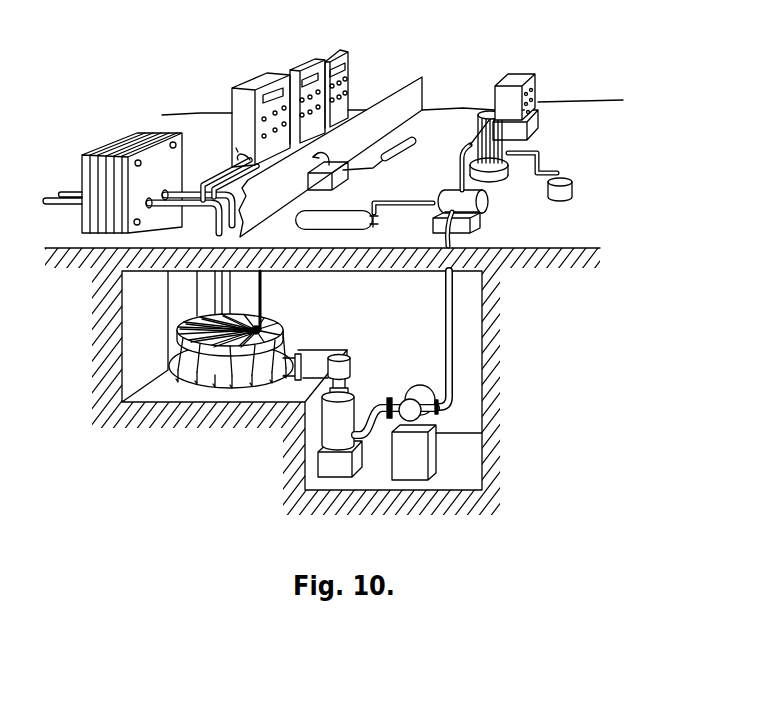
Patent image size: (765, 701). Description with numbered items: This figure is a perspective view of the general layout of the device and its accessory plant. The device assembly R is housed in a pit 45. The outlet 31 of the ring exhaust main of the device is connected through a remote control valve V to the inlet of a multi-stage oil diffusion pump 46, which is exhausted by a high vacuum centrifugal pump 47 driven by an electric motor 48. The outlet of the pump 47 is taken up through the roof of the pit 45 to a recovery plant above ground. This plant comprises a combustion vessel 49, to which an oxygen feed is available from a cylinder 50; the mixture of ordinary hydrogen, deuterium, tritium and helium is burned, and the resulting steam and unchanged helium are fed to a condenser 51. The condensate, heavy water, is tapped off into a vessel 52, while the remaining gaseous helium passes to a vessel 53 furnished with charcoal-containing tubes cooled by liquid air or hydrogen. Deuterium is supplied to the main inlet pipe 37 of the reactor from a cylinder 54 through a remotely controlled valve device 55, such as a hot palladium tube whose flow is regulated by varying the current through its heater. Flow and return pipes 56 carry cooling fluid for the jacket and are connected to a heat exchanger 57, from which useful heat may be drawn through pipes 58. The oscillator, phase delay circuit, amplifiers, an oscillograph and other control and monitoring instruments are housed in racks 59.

The outlet 31 is at (300, 356).
The main inlet pipe 37 is at (262, 286).
The pit 45 is at (140, 332).
The multi-stage oil diffusion pump 46 is at (337, 420).
The high vacuum centrifugal pump 47 is at (414, 412).
The electric motor 48 is at (419, 386).
The combustion vessel 49 is at (488, 198).
The cylinder 50 is at (360, 222).
The condenser 51 is at (503, 147).
The vessel 52 is at (573, 187).
The vessel 53 is at (522, 74).
The cylinder 54 is at (400, 152).
The remotely controlled valve device 55 is at (340, 174).
The flow and return pipes 56 is at (222, 300).
The heat exchanger 57 is at (115, 142).
The pipes 58 is at (72, 192).
The racks 59 is at (318, 53).
The device assembly R is at (208, 383).
The remote control valve V is at (350, 363).